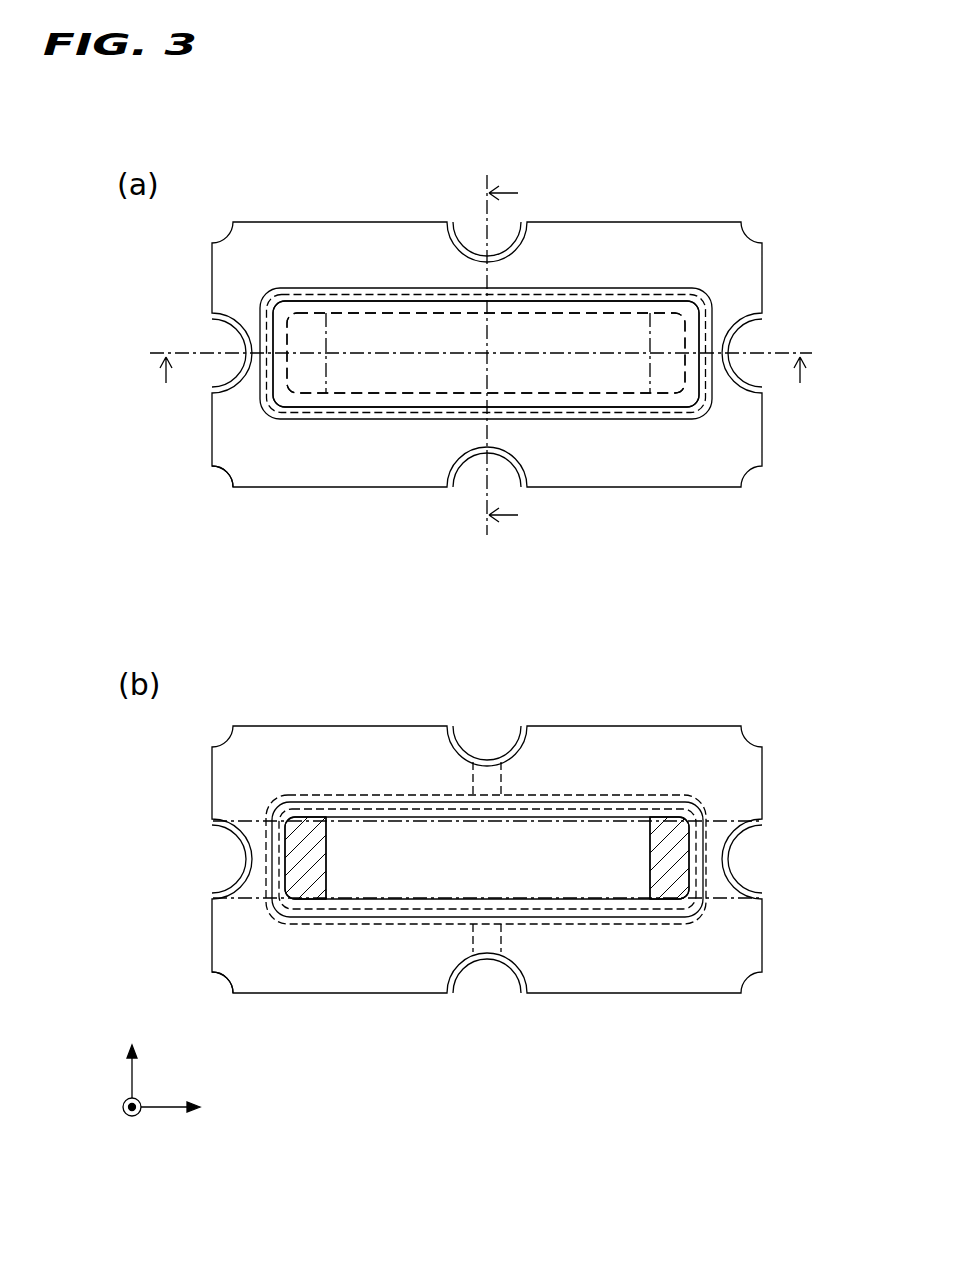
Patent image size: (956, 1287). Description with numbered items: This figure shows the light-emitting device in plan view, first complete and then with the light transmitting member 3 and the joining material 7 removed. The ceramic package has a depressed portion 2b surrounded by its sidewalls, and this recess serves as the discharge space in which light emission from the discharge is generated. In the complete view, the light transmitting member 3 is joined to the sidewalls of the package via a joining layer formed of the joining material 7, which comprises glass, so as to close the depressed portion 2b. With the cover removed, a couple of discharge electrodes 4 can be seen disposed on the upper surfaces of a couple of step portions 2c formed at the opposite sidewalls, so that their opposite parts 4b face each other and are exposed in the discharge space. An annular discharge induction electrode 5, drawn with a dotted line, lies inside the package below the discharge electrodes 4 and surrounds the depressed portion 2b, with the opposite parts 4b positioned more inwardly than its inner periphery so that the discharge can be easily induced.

The depressed portion 2b is at (345, 374).
The step portions 2c is at (662, 875).
The light transmitting member 3 is at (700, 330).
The discharge electrodes 4 is at (688, 828).
The opposite parts 4b is at (647, 847).
The discharge induction electrode 5 is at (687, 917).
The joining material 7 is at (273, 297).